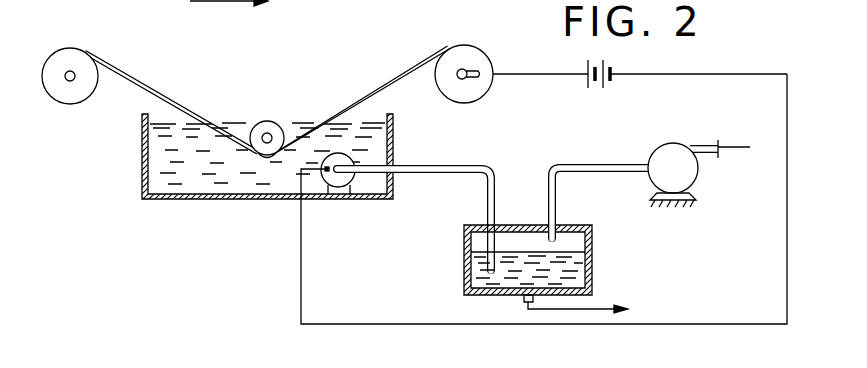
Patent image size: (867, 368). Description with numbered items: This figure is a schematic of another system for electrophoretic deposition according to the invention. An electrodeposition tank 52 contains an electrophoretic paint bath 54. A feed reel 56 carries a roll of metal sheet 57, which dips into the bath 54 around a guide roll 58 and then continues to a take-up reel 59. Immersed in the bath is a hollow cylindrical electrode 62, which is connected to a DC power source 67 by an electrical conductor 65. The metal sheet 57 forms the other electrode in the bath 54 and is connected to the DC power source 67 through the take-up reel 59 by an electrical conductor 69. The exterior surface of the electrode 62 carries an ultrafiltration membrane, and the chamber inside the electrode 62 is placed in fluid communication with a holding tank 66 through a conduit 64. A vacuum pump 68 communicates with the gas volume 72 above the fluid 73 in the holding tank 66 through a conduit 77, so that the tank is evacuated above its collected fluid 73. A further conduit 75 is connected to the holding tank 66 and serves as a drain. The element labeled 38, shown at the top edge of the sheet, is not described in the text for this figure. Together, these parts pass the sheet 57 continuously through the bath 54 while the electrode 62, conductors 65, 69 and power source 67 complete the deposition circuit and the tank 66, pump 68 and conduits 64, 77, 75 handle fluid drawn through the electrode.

The web 38 is at (232, 1).
The electrodeposition tank 52 is at (142, 172).
The electrophoretic paint bath 54 is at (200, 181).
The feed reel 56 is at (70, 61).
The metal sheet 57 is at (132, 80).
The guide roll 58 is at (272, 124).
The take-up reel 59 is at (468, 58).
The hollow cylindrical electrode 62 is at (343, 182).
The conduit 64 is at (434, 173).
The electrical conductor 65 is at (421, 324).
The holding tank 66 is at (590, 268).
The DC power source 67 is at (605, 88).
The vacuum pump 68 is at (676, 150).
The electrical conductor 69 is at (547, 76).
The gas volume 72 is at (574, 244).
The fluid 73 is at (484, 282).
The conduit 75 is at (520, 300).
The conduit 77 is at (600, 164).